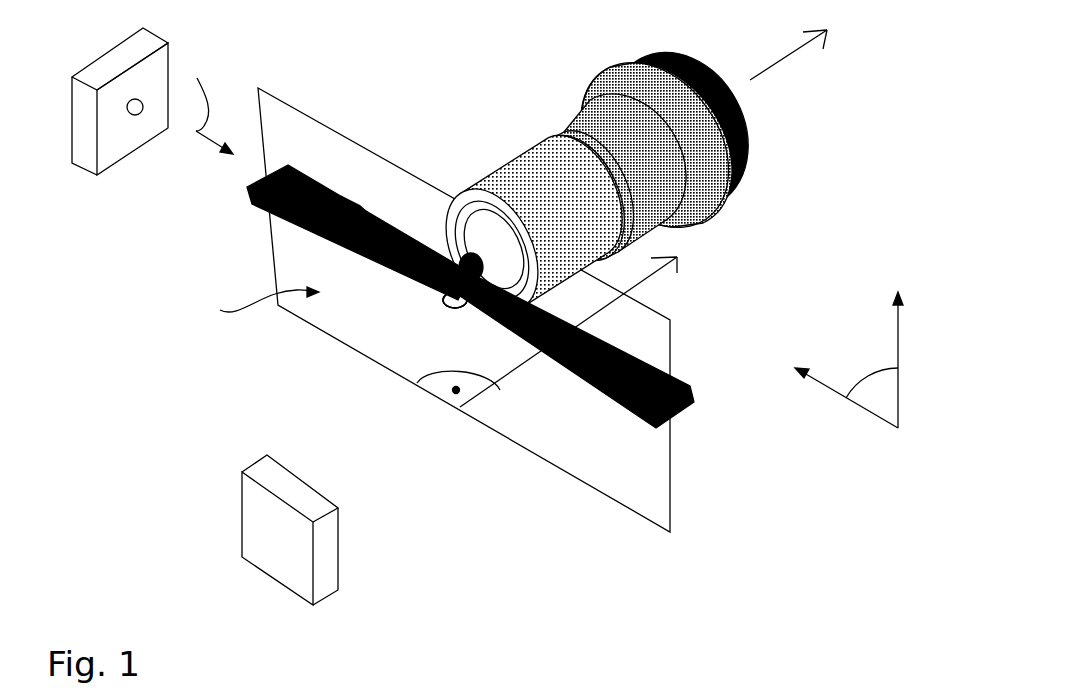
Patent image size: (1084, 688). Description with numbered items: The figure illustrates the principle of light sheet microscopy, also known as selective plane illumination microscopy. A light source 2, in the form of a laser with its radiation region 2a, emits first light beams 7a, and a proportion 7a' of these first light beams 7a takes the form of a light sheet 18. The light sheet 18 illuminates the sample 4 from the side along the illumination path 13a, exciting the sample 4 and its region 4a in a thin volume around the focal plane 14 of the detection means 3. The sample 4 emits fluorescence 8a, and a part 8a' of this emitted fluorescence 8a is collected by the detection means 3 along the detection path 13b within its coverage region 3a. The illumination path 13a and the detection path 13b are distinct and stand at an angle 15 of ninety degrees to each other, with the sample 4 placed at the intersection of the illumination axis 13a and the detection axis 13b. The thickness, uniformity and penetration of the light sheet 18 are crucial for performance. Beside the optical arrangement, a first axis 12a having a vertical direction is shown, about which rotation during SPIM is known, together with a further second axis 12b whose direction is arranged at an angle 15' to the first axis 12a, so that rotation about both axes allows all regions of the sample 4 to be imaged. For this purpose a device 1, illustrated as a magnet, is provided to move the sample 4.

The device 1 is at (258, 520).
The light source 2 is at (110, 62).
The radiation region 2a is at (254, 298).
The detection means 3 is at (513, 175).
The coverage region 3a is at (500, 362).
The sample 4 is at (450, 305).
The region 4a is at (437, 292).
The first light beams 7a is at (470, 243).
The proportion of first light beams 7a' is at (514, 340).
The emitted fluorescence 8a is at (470, 327).
The proportion of emitted fluorescence 8a' is at (464, 194).
The first axis 12a is at (900, 393).
The second axis 12b is at (868, 415).
The illumination path 13a is at (325, 370).
The detection path 13b is at (772, 68).
The focal plane 14 is at (240, 373).
The angle 15 is at (458, 416).
The angle 15' is at (872, 355).
The light sheet 18 is at (408, 262).